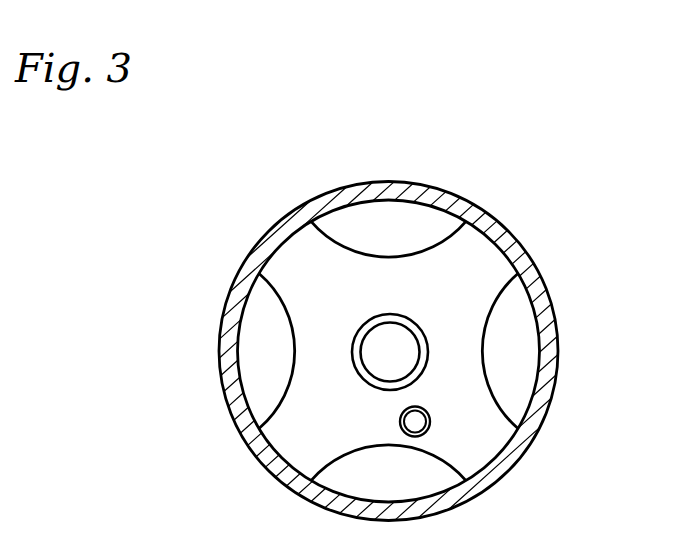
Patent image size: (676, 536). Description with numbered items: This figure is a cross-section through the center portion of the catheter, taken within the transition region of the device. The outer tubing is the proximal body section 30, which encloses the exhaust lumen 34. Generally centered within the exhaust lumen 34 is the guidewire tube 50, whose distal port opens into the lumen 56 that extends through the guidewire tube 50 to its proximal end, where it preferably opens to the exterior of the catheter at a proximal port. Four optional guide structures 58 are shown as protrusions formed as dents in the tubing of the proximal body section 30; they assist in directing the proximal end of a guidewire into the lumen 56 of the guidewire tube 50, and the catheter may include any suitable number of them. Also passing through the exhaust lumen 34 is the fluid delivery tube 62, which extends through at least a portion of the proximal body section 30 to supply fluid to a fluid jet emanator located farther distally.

The proximal body section 30 is at (485, 211).
The exhaust lumen 34 is at (315, 267).
The guide structures 58 is at (375, 257).
The guidewire tube 50 is at (422, 372).
The lumen 56 is at (397, 345).
The fluid delivery tube 62 is at (428, 433).